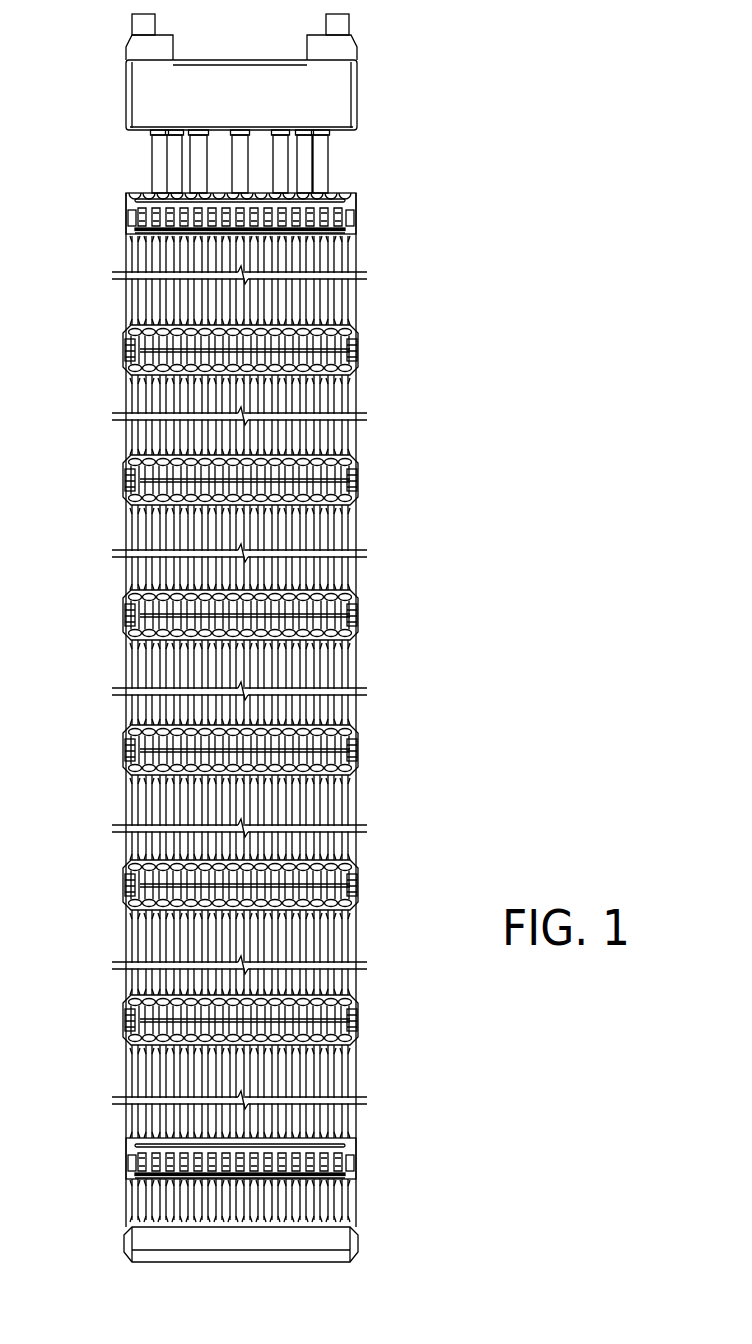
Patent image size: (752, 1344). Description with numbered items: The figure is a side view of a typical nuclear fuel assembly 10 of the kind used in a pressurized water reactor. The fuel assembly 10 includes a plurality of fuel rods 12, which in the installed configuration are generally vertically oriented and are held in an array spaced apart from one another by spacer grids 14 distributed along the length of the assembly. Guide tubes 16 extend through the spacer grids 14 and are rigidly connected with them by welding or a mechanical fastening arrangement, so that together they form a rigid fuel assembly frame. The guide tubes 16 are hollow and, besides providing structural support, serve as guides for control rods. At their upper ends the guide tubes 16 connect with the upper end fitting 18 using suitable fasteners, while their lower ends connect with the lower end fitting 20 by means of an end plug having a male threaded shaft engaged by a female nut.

The fuel assembly 10 is at (596, 298).
The fuel rods 12 is at (352, 438).
The spacer grids 14 is at (355, 215).
The guide tubes 16 is at (157, 160).
The upper end fitting 18 is at (330, 92).
The lower end fitting 20 is at (337, 1240).